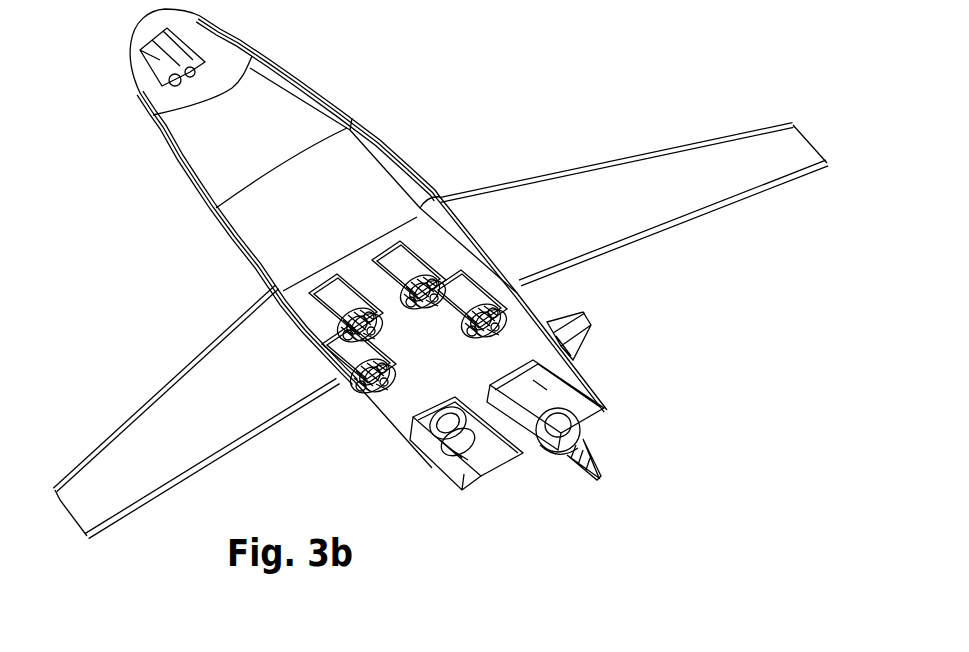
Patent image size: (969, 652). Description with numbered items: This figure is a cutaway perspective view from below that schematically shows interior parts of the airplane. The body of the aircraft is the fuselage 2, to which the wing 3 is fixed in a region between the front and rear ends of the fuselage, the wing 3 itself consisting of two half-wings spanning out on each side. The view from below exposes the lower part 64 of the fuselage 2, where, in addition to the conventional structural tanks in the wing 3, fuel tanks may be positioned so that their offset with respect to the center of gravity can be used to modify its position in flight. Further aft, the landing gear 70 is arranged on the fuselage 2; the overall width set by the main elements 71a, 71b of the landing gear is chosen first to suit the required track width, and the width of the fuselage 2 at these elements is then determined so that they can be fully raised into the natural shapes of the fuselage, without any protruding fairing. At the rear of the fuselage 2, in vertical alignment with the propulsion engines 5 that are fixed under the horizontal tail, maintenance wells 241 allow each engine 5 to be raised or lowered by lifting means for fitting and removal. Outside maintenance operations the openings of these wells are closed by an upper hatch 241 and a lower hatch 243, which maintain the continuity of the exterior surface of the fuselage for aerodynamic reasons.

The fuselage 2 is at (338, 82).
The wing 3 is at (673, 132).
The lower part of the fuselage 64 is at (210, 158).
The landing gear 70 is at (338, 395).
The main element of the landing gear 71a is at (368, 397).
The main element of the landing gear 71b is at (540, 304).
The maintenance well 241 is at (582, 384).
The lower hatch 243 is at (449, 464).
The airplane propulsion engine 5 is at (558, 458).